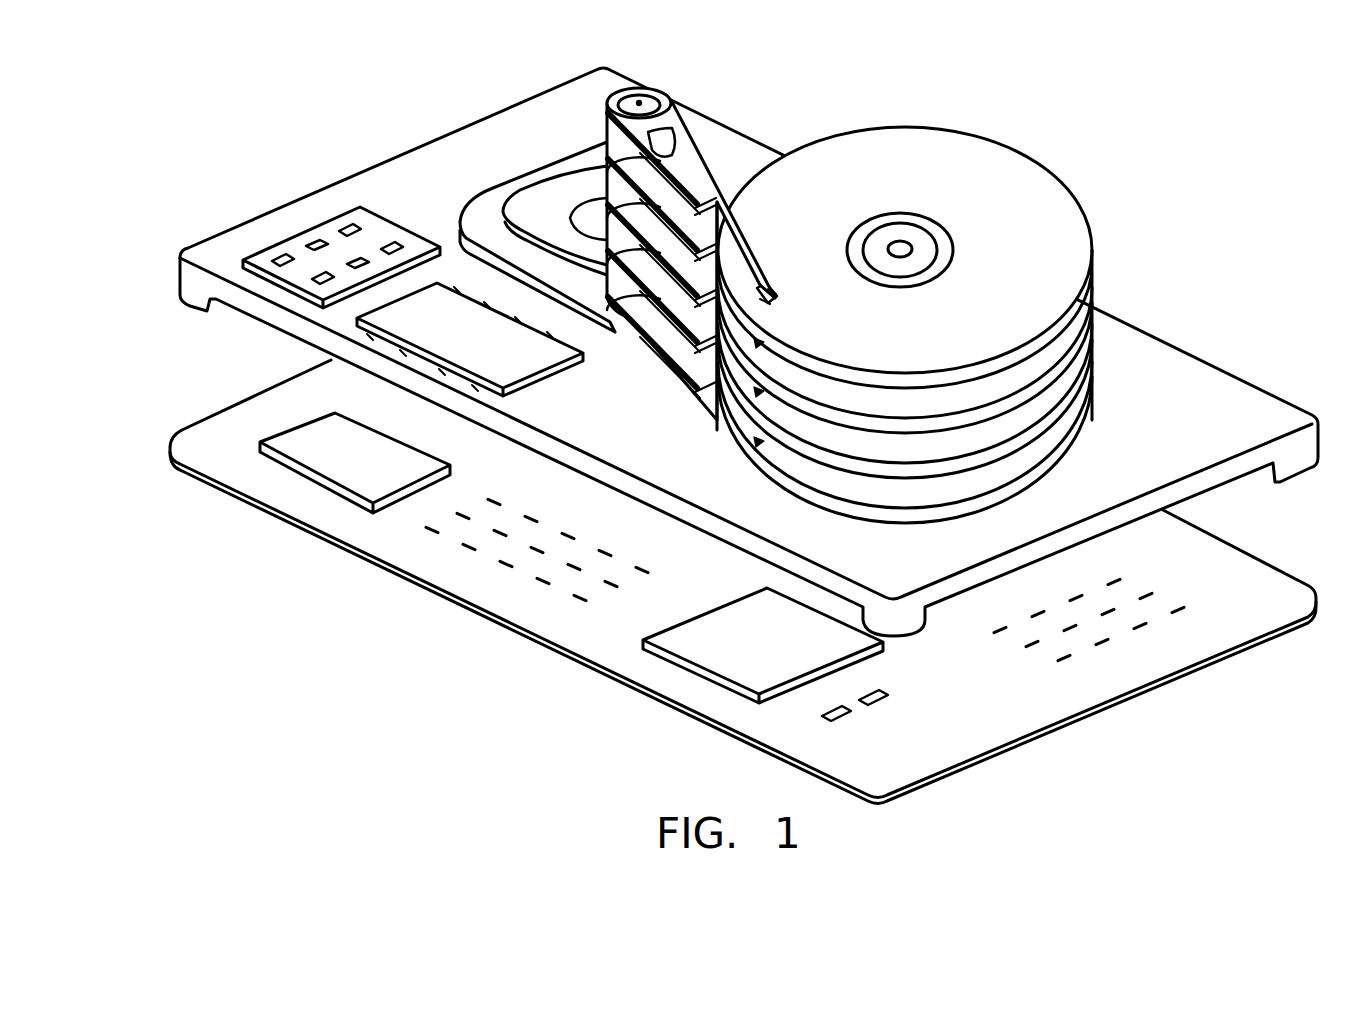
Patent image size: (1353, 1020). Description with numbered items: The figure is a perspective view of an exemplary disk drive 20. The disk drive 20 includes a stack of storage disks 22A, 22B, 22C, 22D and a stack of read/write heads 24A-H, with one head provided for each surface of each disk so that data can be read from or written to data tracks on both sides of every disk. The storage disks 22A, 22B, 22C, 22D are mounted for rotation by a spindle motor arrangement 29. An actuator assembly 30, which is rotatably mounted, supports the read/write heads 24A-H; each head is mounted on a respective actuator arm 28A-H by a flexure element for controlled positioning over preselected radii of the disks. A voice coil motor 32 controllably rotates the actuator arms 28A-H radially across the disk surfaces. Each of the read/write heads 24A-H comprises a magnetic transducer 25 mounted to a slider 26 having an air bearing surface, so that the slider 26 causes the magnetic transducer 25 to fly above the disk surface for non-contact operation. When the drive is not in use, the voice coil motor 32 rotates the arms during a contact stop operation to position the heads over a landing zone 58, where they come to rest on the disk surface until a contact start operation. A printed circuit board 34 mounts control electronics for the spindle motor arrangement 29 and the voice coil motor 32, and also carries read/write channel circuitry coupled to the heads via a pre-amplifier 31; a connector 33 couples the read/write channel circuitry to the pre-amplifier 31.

The disk drive 20 is at (235, 156).
The storage disk 22A is at (1088, 237).
The storage disk 22B is at (1087, 302).
The storage disk 22C is at (1087, 363).
The storage disk 22D is at (1087, 420).
The read/write heads 24A-H is at (770, 292).
The magnetic transducer 25 is at (760, 302).
The slider 26 is at (773, 295).
The actuator arms 28A-H is at (700, 200).
The spindle motor arrangement 29 is at (913, 243).
The actuator assembly 30 is at (639, 102).
The pre-amplifier 31 is at (553, 362).
The voice coil motor 32 is at (490, 195).
The connector 33 is at (387, 230).
The printed circuit board 34 is at (1068, 700).
The landing zone 58 is at (953, 238).